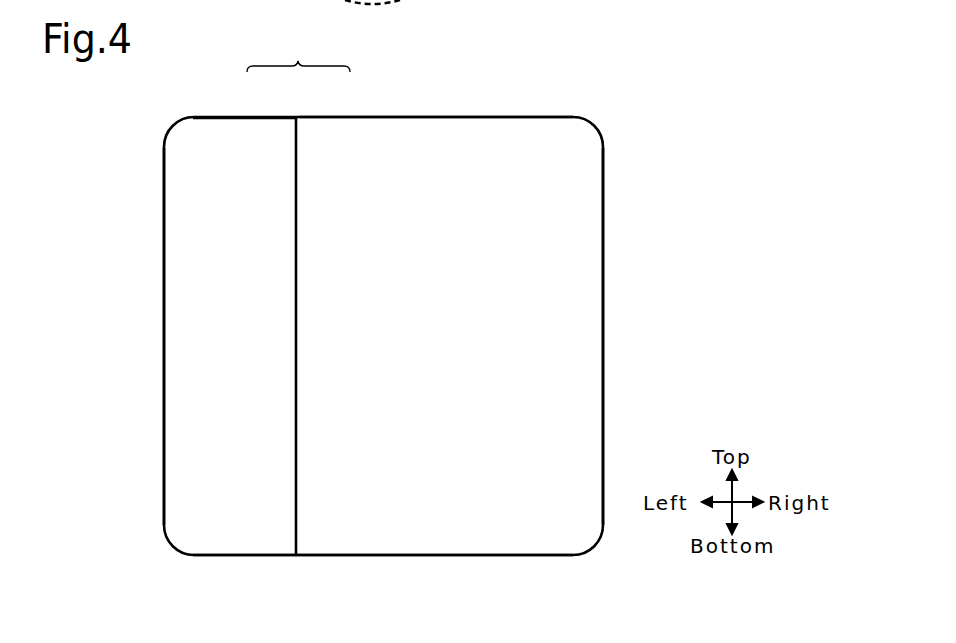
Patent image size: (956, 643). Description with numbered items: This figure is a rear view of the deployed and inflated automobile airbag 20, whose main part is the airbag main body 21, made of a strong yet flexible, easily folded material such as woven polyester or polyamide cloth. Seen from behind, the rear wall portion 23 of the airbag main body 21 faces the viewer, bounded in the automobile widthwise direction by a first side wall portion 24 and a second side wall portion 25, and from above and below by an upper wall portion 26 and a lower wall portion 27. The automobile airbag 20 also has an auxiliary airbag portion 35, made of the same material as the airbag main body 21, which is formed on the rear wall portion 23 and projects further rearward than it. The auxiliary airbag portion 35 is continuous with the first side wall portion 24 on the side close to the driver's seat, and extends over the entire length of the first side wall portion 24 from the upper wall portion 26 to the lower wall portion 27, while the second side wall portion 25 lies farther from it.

The automobile airbag 20 is at (298, 53).
The airbag main body 21 is at (331, 118).
The rear wall portion 23 is at (594, 338).
The first side wall portion 24 is at (164, 244).
The second side wall portion 25 is at (604, 250).
The upper wall portion 26 is at (522, 117).
The lower wall portion 27 is at (523, 556).
The auxiliary airbag portion 35 is at (268, 118).